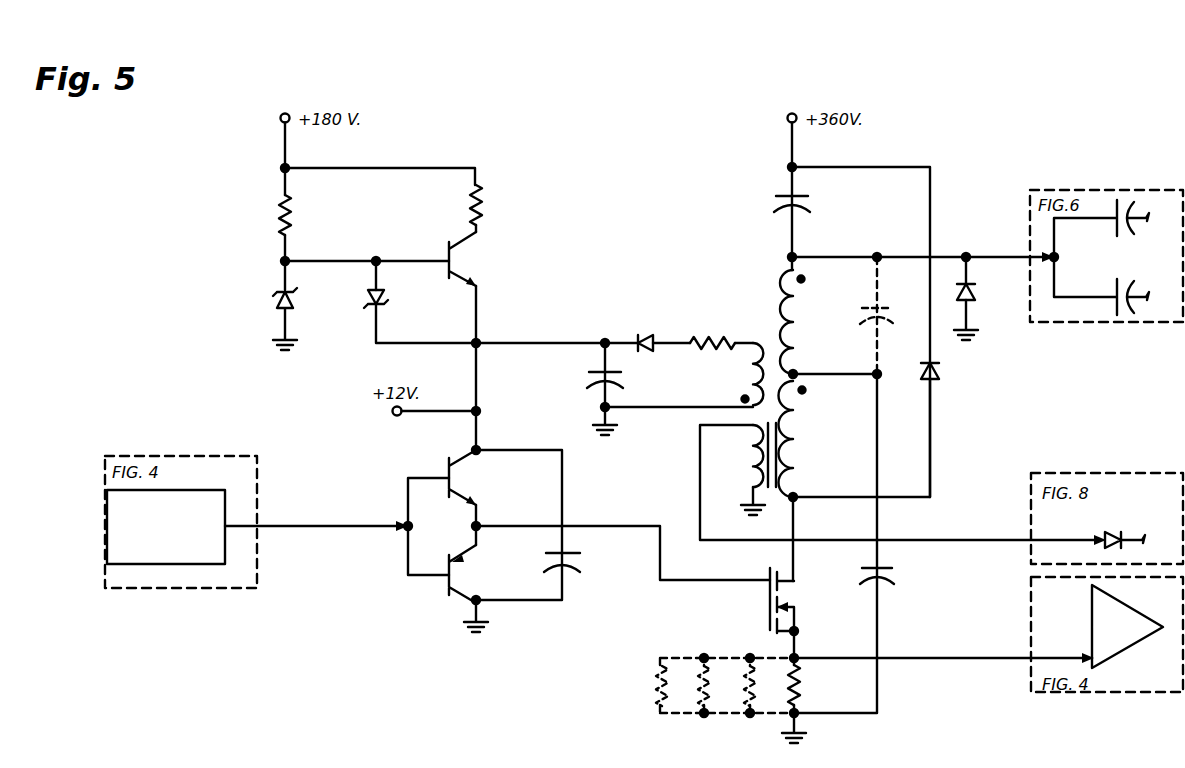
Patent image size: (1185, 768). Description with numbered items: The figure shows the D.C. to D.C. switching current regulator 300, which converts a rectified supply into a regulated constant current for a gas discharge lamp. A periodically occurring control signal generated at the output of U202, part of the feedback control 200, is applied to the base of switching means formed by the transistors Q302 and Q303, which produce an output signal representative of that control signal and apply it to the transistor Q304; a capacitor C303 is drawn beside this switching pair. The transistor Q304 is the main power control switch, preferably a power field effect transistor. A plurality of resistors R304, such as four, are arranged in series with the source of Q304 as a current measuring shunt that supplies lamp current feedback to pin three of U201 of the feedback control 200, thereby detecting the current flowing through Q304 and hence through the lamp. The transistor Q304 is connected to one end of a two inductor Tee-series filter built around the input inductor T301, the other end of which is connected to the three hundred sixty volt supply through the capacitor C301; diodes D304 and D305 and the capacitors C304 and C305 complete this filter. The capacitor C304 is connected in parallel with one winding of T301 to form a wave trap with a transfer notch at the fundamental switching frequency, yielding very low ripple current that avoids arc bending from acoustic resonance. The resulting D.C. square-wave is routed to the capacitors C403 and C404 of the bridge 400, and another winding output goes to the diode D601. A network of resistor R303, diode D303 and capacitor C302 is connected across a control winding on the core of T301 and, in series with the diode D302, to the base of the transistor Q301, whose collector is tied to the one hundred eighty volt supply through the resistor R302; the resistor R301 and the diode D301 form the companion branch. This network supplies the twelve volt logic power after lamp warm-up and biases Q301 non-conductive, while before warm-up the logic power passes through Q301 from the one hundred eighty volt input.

The D.C. to D.C. switching current regulator 300 is at (951, 87).
The bridge 400 is at (1110, 190).
The feedback control 200 is at (237, 456).
The resistor R301 is at (296, 212).
The resistor R302 is at (486, 208).
The resistor R303 is at (701, 362).
The resistors R304 is at (703, 640).
The transistor Q301 is at (462, 258).
The transistor Q302 is at (461, 478).
The transistor Q303 is at (461, 576).
The transistor Q304 is at (793, 598).
The diode D301 is at (277, 300).
The diode D302 is at (386, 300).
The diode D303 is at (641, 333).
The diode D304 is at (940, 370).
The diode D305 is at (975, 292).
The capacitor C301 is at (812, 205).
The capacitor C302 is at (594, 384).
The capacitor C303 is at (583, 556).
The capacitor C304 is at (898, 575).
The capacitor C305 is at (870, 320).
The input inductor T301 is at (783, 313).
The control signal generator U202 is at (166, 527).
The feedback control amplifier U201 is at (1118, 626).
The diode D601 is at (1135, 518).
The capacitor C403 is at (1112, 232).
The capacitor C404 is at (1148, 282).